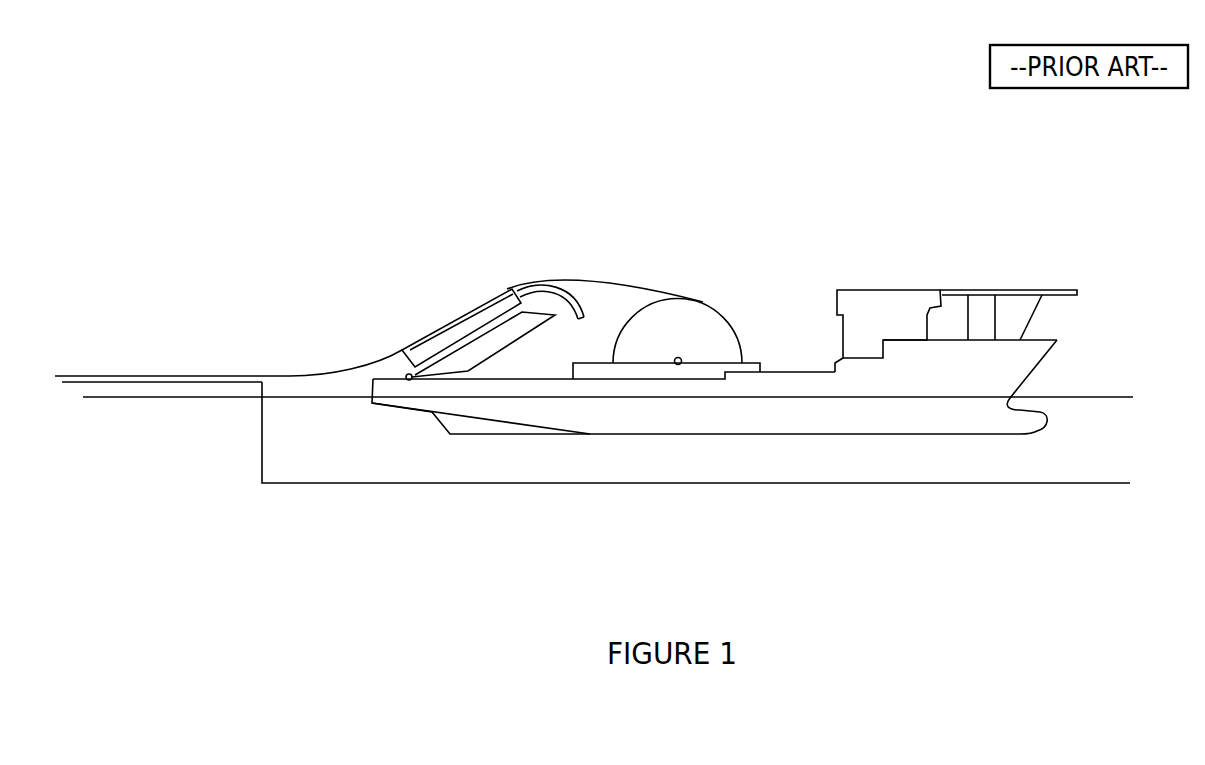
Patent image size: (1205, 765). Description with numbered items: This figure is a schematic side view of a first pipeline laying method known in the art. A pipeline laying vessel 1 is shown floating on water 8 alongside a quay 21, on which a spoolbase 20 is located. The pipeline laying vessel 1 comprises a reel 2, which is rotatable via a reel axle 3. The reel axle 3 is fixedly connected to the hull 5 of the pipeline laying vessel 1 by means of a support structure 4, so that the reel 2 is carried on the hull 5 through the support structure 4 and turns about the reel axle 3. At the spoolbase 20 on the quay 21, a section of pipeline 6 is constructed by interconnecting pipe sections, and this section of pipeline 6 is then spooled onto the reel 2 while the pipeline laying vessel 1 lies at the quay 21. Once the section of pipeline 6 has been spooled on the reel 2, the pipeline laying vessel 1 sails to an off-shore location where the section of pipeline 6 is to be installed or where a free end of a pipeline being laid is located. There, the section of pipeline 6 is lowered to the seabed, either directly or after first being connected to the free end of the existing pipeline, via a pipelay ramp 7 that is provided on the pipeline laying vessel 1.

The pipeline laying vessel 1 is at (968, 232).
The reel 2 is at (702, 296).
The reel axle 3 is at (681, 366).
The support structure 4 is at (603, 362).
The hull 5 is at (837, 437).
The section of pipeline 6 is at (352, 367).
The pipelay ramp 7 is at (480, 278).
The water 8 is at (608, 432).
The spoolbase 20 is at (135, 323).
The quay 21 is at (172, 450).